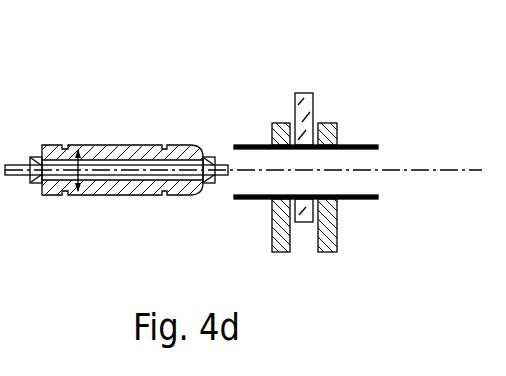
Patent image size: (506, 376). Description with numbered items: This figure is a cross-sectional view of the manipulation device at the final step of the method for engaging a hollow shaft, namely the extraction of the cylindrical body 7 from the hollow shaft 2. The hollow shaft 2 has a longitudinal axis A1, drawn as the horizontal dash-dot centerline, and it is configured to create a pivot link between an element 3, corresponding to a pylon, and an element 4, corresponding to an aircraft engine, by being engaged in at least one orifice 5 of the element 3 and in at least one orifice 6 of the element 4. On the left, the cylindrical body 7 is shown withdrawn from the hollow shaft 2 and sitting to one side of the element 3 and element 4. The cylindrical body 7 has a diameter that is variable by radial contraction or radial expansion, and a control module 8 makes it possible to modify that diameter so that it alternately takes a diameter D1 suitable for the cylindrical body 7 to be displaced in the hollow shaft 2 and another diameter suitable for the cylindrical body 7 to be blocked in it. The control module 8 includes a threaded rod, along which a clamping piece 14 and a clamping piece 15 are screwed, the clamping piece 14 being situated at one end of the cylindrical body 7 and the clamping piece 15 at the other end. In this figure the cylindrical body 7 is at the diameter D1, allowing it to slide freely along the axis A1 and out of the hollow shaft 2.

The hollow shaft 2 is at (370, 146).
The element 3 is at (283, 248).
The element 4 is at (305, 104).
The orifice 5 is at (283, 167).
The orifice 6 is at (307, 184).
The cylindrical body 7 is at (123, 153).
The control module 8 is at (22, 194).
The clamping piece 14 is at (207, 188).
The clamping piece 15 is at (34, 190).
The longitudinal axis A1 is at (443, 171).
The diameter D1 is at (91, 146).